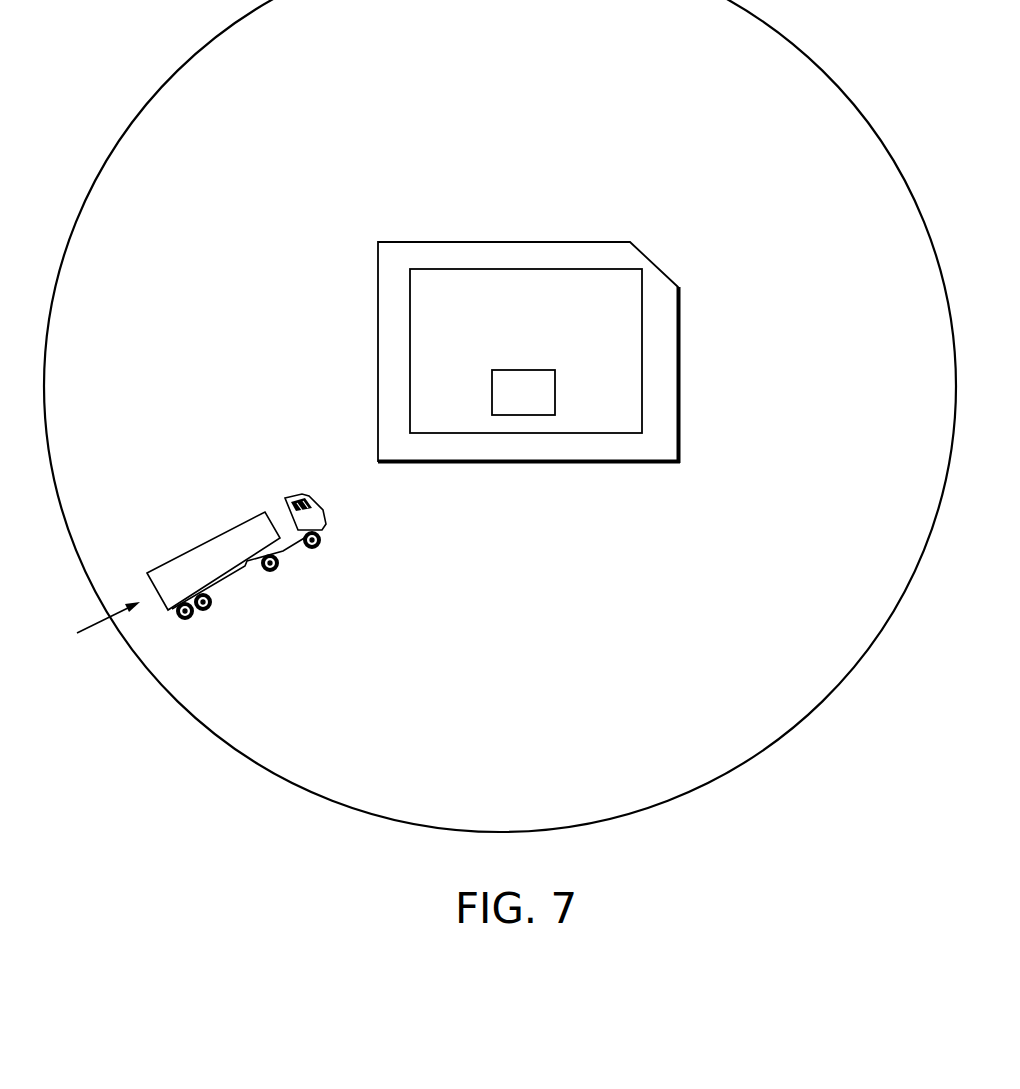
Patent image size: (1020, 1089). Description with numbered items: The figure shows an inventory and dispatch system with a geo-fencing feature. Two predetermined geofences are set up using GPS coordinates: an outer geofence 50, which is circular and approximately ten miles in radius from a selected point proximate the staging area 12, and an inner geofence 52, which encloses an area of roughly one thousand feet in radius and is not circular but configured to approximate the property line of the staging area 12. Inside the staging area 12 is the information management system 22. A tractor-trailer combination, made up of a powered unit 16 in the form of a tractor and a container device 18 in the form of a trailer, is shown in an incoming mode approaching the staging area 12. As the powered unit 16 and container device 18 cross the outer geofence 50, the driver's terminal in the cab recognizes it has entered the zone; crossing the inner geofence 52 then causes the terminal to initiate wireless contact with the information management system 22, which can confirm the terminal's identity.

The outer geofence 50 is at (822, 70).
The inner geofence 52 is at (493, 242).
The staging area 12 is at (643, 350).
The information management system 22 is at (533, 370).
The container device 18 is at (188, 552).
The powered unit 16 is at (283, 505).